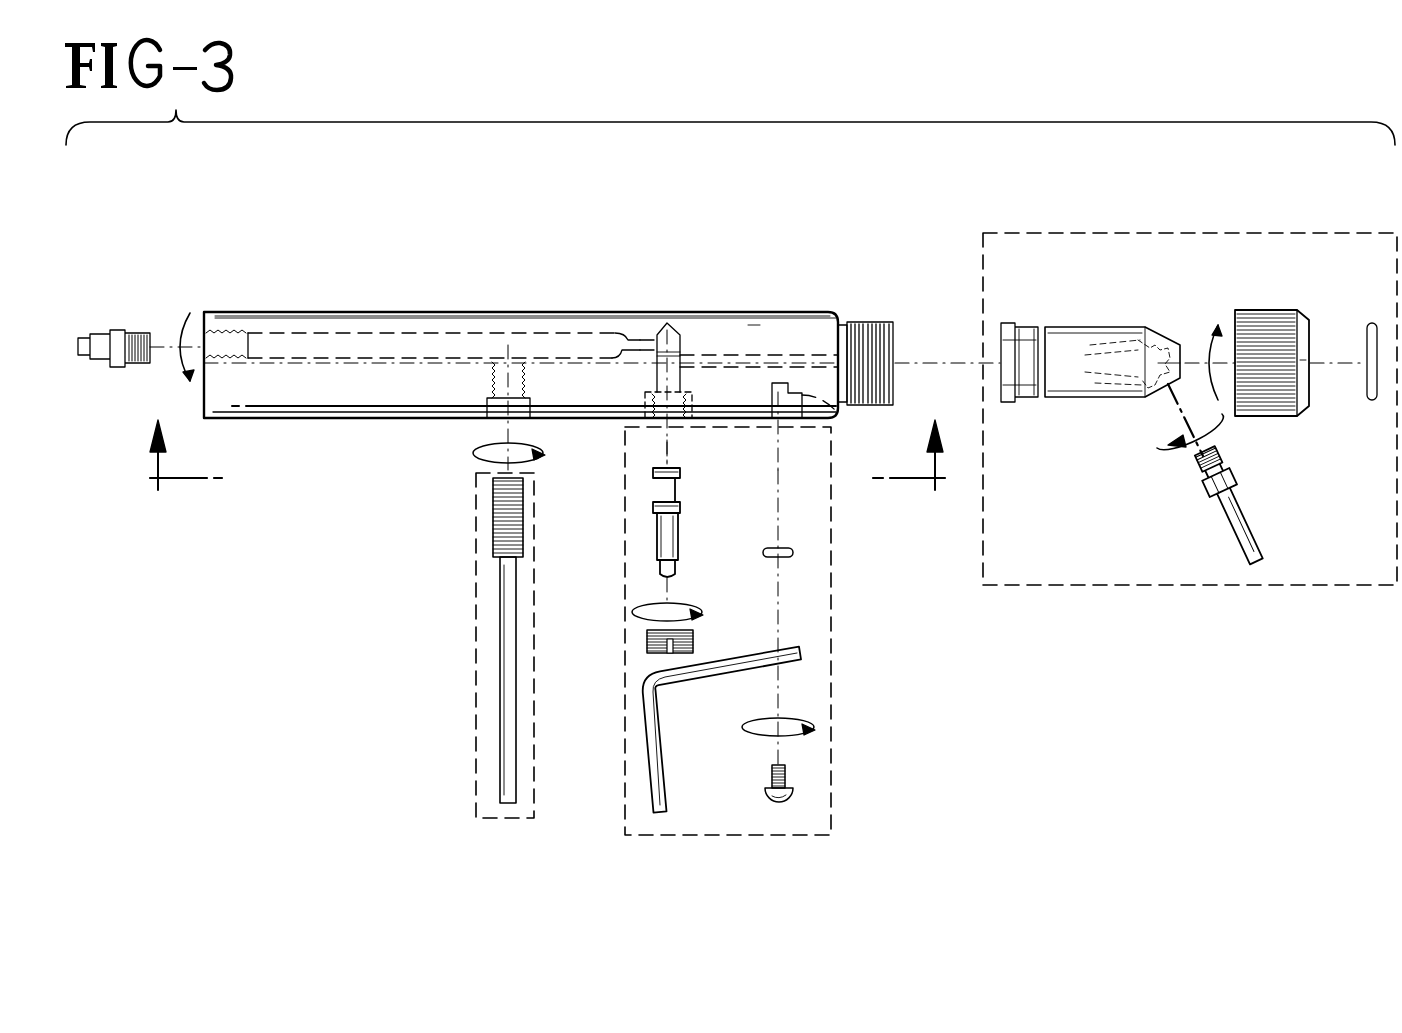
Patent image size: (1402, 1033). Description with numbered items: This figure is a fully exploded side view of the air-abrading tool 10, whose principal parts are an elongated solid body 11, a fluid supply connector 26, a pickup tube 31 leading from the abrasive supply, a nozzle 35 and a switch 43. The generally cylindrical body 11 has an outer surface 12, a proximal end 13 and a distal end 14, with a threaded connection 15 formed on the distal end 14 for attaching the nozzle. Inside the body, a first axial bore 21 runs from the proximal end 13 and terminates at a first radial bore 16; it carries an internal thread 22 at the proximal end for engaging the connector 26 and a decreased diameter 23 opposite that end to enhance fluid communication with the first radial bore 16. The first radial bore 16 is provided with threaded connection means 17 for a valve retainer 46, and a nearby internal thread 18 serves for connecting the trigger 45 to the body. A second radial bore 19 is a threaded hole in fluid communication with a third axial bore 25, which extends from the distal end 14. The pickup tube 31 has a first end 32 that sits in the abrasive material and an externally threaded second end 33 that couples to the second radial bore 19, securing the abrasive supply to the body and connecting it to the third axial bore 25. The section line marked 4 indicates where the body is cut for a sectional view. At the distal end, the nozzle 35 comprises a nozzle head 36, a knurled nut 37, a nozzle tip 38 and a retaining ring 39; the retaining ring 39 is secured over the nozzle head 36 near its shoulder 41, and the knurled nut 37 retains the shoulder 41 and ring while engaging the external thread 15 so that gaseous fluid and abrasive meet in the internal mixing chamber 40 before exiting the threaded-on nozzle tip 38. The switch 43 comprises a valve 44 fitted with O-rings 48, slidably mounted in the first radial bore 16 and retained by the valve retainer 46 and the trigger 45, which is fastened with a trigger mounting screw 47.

The section line 4 is at (546, 473).
The air-abrading tool 10 is at (975, 652).
The solid body 11 is at (790, 330).
The outer surface 12 is at (732, 313).
The proximal end 13 is at (204, 398).
The distal end 14 is at (895, 332).
The threaded connection 15 is at (865, 322).
The first radial bore 16 is at (658, 330).
The threaded connection means 17 is at (643, 400).
The internal thread 18 is at (812, 393).
The second radial bore 19 is at (492, 372).
The first axial bore 21 is at (284, 333).
The internal thread 22 is at (238, 328).
The decreased diameter 23 is at (630, 338).
The third axial bore 25 is at (754, 328).
The fluid supply connector 26 is at (118, 331).
The pickup tube 31 is at (505, 820).
The first end 32 is at (504, 705).
The externally threaded second end 33 is at (493, 500).
The nozzle 35 is at (1158, 587).
The nozzle head 36 is at (1090, 327).
The knurled nut 37 is at (1258, 310).
The nozzle tip 38 is at (1250, 515).
The retaining ring 39 is at (1372, 323).
The internal mixing chamber 40 is at (1146, 393).
The shoulder 41 is at (1008, 323).
The switch 43 is at (720, 837).
The valve 44 is at (655, 572).
The trigger 45 is at (805, 655).
The valve retainer 46 is at (647, 640).
The trigger mounting screw 47 is at (790, 795).
The O-rings 48 is at (775, 548).